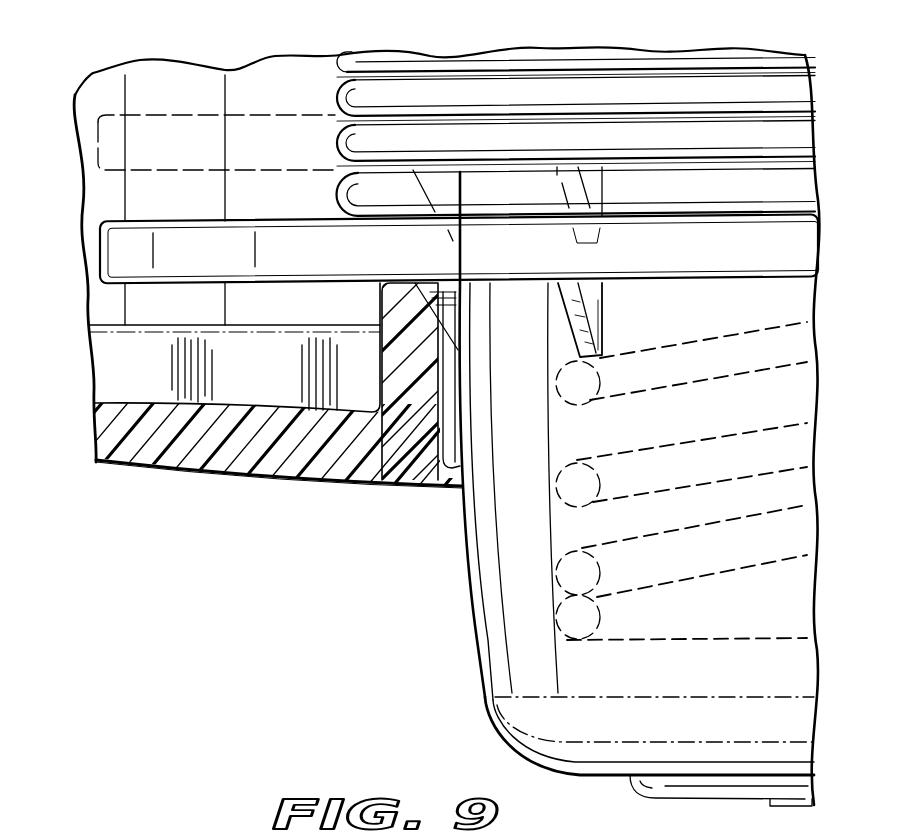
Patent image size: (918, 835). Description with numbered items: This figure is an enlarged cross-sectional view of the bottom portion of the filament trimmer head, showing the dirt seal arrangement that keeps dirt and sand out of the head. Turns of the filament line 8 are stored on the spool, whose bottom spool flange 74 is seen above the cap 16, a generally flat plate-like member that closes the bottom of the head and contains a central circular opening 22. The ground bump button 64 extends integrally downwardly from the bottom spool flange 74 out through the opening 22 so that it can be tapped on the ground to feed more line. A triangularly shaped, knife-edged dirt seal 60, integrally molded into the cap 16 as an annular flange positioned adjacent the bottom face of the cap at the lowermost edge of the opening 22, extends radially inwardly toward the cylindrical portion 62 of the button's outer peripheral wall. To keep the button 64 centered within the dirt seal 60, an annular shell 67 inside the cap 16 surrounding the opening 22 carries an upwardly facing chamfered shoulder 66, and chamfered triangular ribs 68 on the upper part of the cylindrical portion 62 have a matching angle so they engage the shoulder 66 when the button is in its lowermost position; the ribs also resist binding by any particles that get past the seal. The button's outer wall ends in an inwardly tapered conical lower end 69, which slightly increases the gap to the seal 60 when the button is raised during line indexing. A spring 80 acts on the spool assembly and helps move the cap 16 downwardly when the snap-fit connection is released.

The filament line 8 is at (408, 97).
The cap 16 is at (143, 450).
The circular opening 22 is at (383, 462).
The dirt seal 60 is at (462, 470).
The cylindrical portion 62 is at (452, 462).
The ground bump button 64 is at (462, 660).
The chamfered shoulder 66 is at (415, 290).
The annular shell 67 is at (340, 365).
The chamfered triangular ribs 68 is at (563, 313).
The conical lower end 69 is at (472, 592).
The bottom spool flange 74 is at (130, 257).
The spring 80 is at (795, 343).